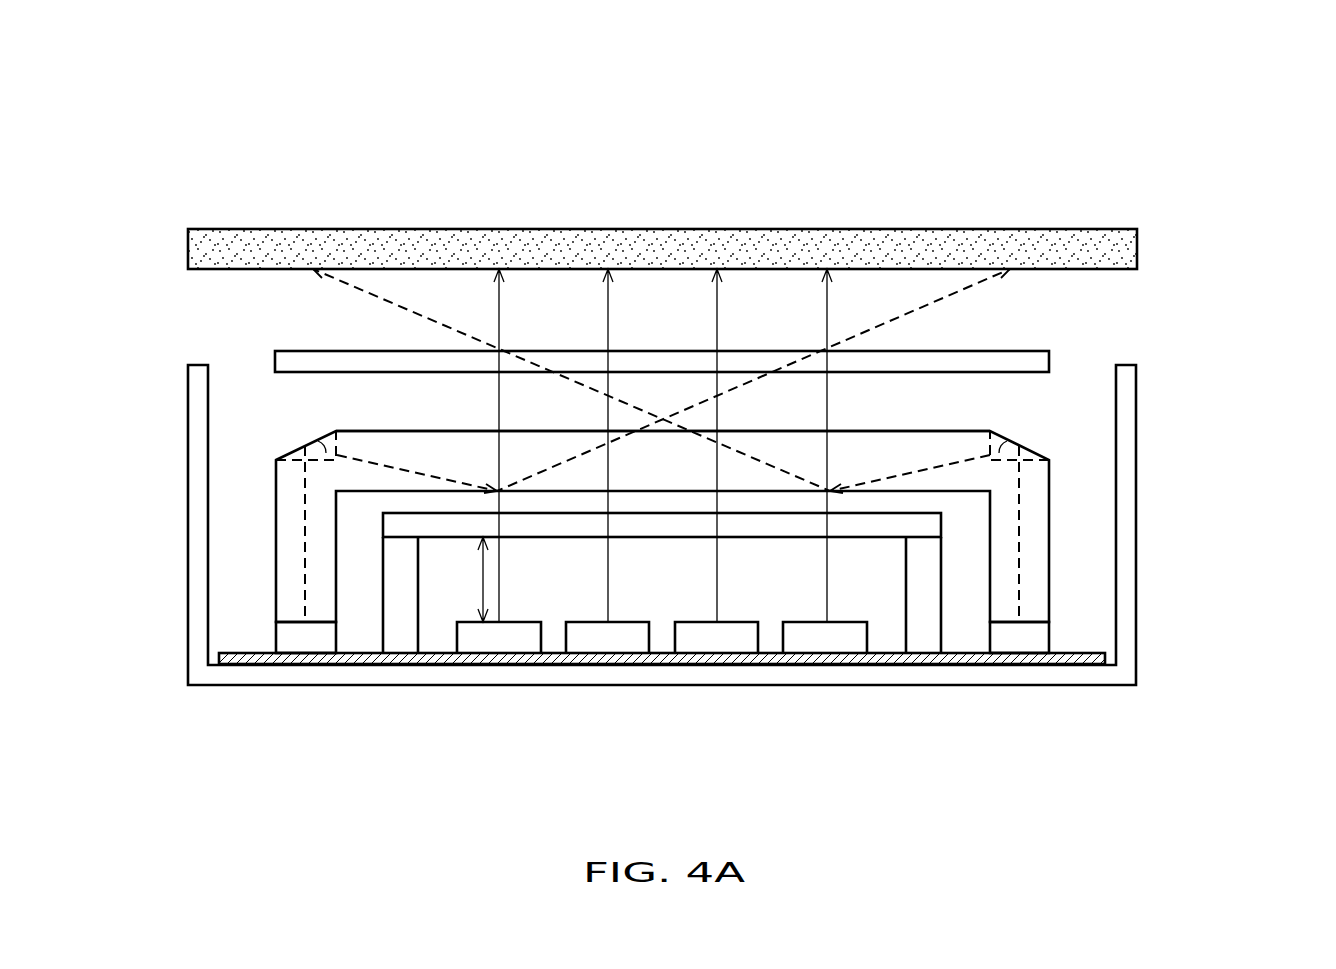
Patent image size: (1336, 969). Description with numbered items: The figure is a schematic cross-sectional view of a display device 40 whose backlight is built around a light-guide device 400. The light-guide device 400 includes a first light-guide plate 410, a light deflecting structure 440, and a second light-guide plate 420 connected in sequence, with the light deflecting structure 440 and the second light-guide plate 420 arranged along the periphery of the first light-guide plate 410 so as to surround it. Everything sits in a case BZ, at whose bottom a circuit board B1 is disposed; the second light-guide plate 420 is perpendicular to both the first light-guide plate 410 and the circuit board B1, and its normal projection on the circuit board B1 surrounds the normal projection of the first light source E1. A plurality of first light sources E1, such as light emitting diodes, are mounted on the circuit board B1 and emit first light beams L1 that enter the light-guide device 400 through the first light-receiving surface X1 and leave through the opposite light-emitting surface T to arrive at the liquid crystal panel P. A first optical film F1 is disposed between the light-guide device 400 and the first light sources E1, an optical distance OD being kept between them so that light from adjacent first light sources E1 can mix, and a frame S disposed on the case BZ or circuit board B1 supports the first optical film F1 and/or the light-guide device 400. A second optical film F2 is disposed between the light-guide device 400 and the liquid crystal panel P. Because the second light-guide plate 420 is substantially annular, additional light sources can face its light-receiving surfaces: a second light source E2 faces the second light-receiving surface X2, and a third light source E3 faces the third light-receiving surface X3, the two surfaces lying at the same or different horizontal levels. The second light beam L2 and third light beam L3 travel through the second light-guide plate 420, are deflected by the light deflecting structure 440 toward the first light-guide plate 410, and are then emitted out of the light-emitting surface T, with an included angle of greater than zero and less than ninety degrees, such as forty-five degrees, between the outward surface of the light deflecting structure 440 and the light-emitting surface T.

The display device 40 is at (1206, 797).
The light-guide device 400 is at (1270, 42).
The first light-guide plate 410 is at (360, 476).
The second light-guide plate 420 is at (288, 593).
The light deflecting structure 440 is at (311, 455).
The case BZ is at (1128, 527).
The liquid crystal panel P is at (215, 248).
The second optical film F2 is at (300, 359).
The first optical film F1 is at (405, 523).
The light-emitting surface T is at (402, 422).
The frame S is at (400, 638).
The first light source E1 is at (633, 638).
The second light source E2 is at (320, 638).
The third light source E3 is at (1003, 638).
The circuit board B1 is at (725, 658).
The first light beam L1 is at (500, 590).
The second light beam L2 is at (973, 292).
The third light beam L3 is at (360, 294).
The optical distance OD is at (469, 579).
The first light-receiving surface X1 is at (443, 505).
The second light-receiving surface X2 is at (296, 636).
The third light-receiving surface X3 is at (1039, 636).